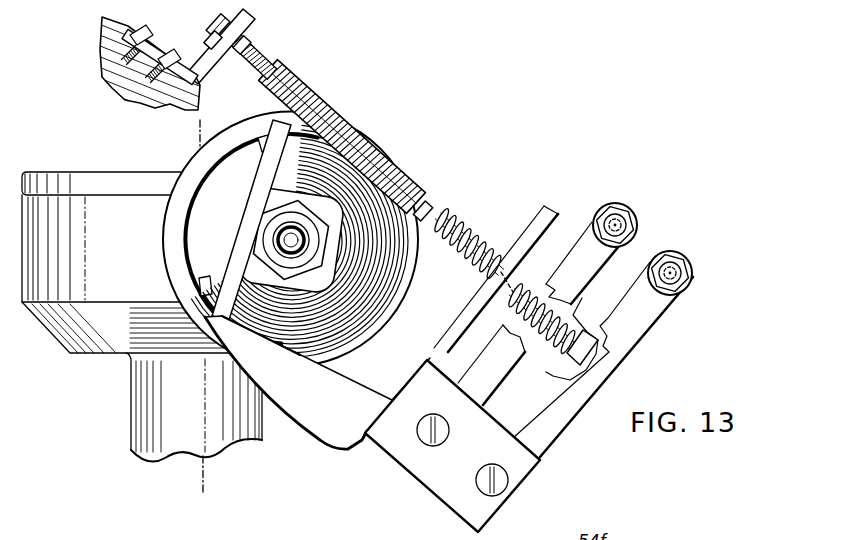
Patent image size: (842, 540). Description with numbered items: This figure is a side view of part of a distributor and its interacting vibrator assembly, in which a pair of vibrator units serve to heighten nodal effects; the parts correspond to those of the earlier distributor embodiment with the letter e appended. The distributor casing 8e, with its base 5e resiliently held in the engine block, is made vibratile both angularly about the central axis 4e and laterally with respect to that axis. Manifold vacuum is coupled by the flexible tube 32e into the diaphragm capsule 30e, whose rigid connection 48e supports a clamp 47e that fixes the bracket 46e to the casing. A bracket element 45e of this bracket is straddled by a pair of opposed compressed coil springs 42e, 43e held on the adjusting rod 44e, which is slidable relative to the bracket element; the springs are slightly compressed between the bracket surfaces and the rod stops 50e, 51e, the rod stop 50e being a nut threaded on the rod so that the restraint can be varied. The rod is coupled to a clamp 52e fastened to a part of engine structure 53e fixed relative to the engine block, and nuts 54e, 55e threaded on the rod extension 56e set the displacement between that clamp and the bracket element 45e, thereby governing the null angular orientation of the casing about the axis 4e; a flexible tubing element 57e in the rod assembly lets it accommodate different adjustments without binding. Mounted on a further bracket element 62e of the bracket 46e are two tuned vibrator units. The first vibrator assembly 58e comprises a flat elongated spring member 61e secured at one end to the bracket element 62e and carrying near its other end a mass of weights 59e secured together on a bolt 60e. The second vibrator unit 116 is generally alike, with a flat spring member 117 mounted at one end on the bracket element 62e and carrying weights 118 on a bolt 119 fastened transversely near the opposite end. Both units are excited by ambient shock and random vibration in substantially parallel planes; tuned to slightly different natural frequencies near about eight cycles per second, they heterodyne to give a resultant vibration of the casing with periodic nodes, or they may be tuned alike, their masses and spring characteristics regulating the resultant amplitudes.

The nut 54e is at (226, 18).
The clamp 52e is at (206, 48).
The nut 55e is at (250, 41).
The rod extension 56e is at (248, 67).
The engine structure 53e is at (123, 88).
The flexible tubing element 57e is at (365, 142).
The central axis 4e is at (200, 147).
The distributor casing 8e is at (138, 245).
The distributor base 5e is at (165, 413).
The diaphragm capsule 30e is at (250, 183).
The clamp 47e is at (278, 180).
The tube 32e is at (277, 237).
The rigid connection 48e is at (252, 247).
The coil spring 42e is at (478, 251).
The bracket 46e is at (342, 420).
The rod stop 50e is at (433, 206).
The adjusting rod 44e is at (476, 244).
The bracket element 45e is at (551, 211).
The coil spring 43e is at (574, 313).
The rod stop 51e is at (568, 360).
The mechanical vibrator assembly 58e is at (615, 212).
The weights 59e is at (636, 228).
The bolt 60e is at (618, 222).
The flat elongated spring member 61e is at (588, 272).
The second vibrator unit 116 is at (632, 303).
The flat spring member 117 is at (630, 338).
The weights 118 is at (697, 276).
The bolt 119 is at (673, 272).
The bracket element 62e is at (505, 450).